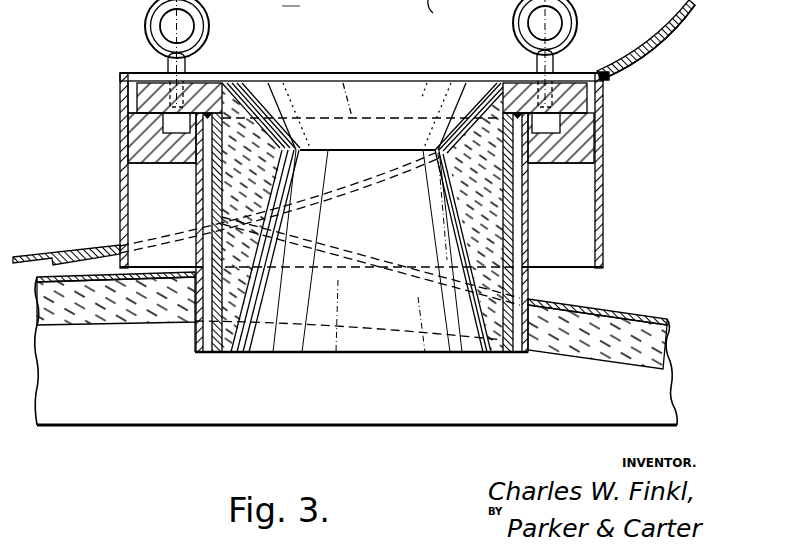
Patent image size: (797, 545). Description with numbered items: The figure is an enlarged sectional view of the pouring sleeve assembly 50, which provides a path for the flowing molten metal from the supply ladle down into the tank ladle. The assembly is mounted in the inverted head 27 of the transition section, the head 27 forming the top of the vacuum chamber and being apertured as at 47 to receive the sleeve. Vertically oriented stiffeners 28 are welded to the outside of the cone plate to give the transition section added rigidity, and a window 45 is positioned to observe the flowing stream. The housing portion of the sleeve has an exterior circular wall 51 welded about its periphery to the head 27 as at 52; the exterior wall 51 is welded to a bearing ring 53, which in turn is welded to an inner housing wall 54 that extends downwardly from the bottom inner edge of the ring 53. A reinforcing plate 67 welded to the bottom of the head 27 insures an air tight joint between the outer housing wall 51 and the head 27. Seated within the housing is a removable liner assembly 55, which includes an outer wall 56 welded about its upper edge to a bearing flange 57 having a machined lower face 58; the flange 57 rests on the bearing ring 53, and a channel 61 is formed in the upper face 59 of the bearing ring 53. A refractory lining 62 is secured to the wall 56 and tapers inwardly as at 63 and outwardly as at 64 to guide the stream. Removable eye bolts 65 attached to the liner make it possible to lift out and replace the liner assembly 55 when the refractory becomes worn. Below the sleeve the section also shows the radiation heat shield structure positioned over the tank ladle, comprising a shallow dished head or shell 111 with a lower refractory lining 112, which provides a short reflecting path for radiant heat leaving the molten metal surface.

The inverted head 27 is at (677, 23).
The vertically oriented stiffeners 28 is at (443, 13).
The window 45 is at (291, 5).
The aperture 47 is at (117, 238).
The pouring sleeve assembly 50 is at (627, 220).
The exterior circular wall 51 is at (605, 185).
The weld 52 is at (605, 80).
The bearing ring 53 is at (598, 137).
The inner housing wall 54 is at (530, 276).
The removable liner assembly 55 is at (218, 360).
The outer wall 56 is at (510, 355).
The bearing flange 57 is at (200, 83).
The machined lower face 58 is at (127, 117).
The upper face 59 is at (157, 110).
The channel 61 is at (160, 128).
The refractory lining 62 is at (240, 117).
The inward taper 63 is at (267, 127).
The outward taper 64 is at (256, 340).
The removable eye bolts 65 is at (515, 36).
The reinforcing plate 67 is at (648, 62).
The shallow dished head or shell 111 is at (643, 315).
The lower refractory lining 112 is at (663, 344).